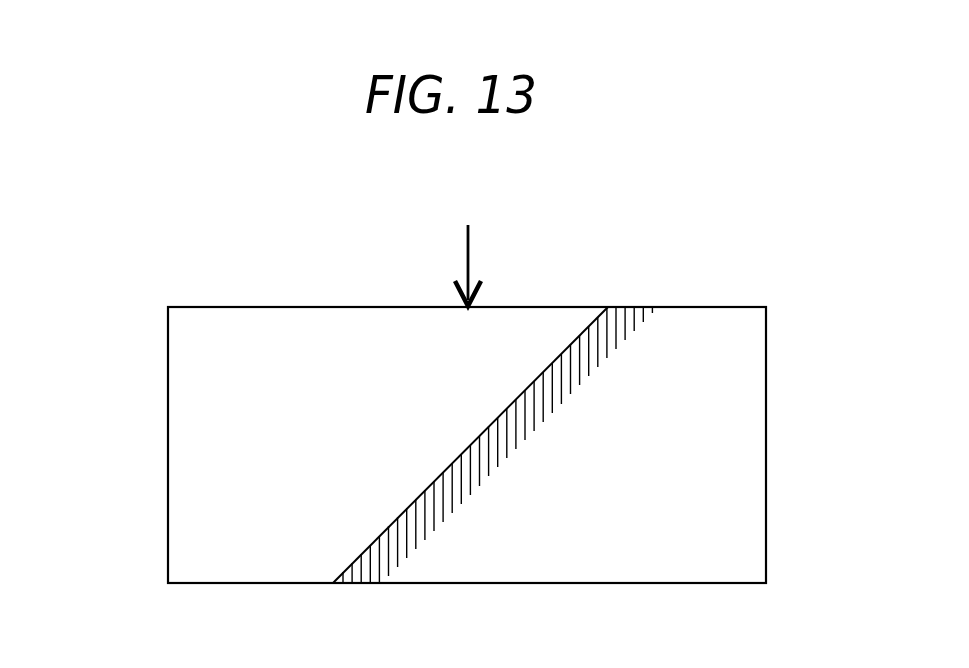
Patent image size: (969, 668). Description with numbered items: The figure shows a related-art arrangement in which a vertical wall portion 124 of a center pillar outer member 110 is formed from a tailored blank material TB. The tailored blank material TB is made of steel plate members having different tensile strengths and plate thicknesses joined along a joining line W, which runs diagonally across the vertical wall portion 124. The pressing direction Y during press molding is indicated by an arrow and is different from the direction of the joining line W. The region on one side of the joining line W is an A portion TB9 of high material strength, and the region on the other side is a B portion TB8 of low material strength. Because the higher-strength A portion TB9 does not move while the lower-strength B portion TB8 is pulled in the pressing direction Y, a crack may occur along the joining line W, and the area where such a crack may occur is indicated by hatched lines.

The vertical wall portion 124 is at (401, 445).
The center pillar outer member 110 is at (167, 400).
The tailored blank material TB is at (464, 445).
The A portion TB9 is at (227, 499).
The B portion TB8 is at (723, 433).
The joining line W is at (480, 435).
The pressing direction Y is at (467, 257).